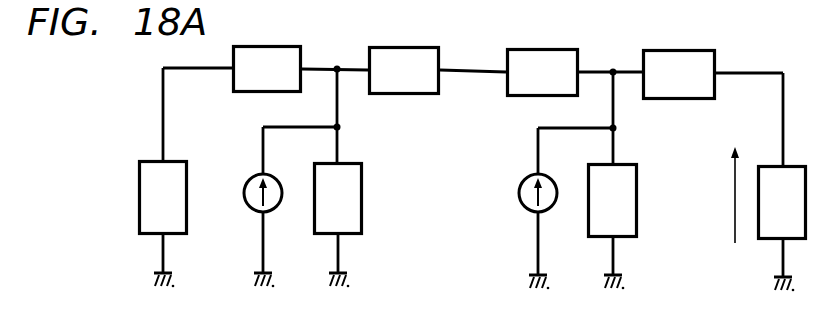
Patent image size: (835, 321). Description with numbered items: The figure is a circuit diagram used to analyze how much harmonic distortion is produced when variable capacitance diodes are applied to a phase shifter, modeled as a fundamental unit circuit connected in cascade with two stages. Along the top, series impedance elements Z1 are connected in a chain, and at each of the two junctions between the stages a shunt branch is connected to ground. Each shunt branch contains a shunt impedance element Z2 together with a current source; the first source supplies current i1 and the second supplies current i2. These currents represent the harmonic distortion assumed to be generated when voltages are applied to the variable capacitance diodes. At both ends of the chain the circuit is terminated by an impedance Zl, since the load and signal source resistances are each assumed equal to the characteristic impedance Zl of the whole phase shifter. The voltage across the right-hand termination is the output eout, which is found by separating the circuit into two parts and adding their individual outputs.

The series impedance Z1 is at (474, 73).
The characteristic impedance Zl is at (473, 200).
The shunt impedance Z2 is at (476, 200).
The current of first current source i1 is at (251, 208).
The current of second current source i2 is at (523, 209).
The output eout is at (718, 211).